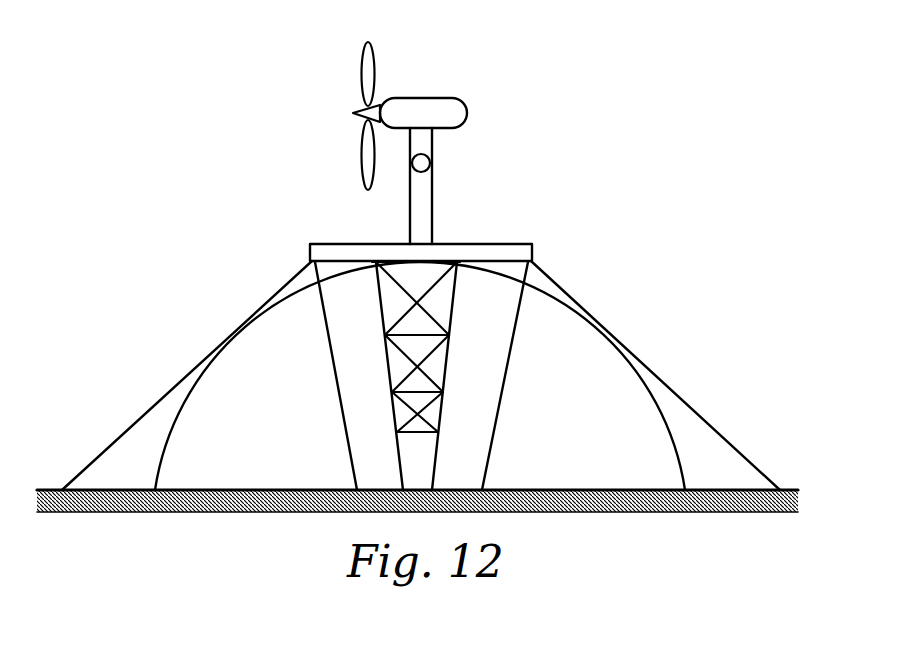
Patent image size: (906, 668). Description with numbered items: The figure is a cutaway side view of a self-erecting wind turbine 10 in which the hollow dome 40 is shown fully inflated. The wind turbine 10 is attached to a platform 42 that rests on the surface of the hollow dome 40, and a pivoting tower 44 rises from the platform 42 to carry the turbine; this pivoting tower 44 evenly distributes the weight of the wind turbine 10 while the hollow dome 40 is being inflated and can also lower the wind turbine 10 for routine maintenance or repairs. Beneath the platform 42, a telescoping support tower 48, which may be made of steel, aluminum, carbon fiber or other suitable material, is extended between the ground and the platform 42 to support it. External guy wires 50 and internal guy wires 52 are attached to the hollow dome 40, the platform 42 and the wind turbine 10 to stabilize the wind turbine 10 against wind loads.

The wind turbine 10 is at (470, 88).
The hollow dome 40 is at (612, 366).
The platform 42 is at (332, 243).
The pivoting tower 44 is at (430, 164).
The telescoping support tower 48 is at (452, 336).
The external guy wires 50 is at (120, 432).
The internal guy wires 52 is at (338, 398).